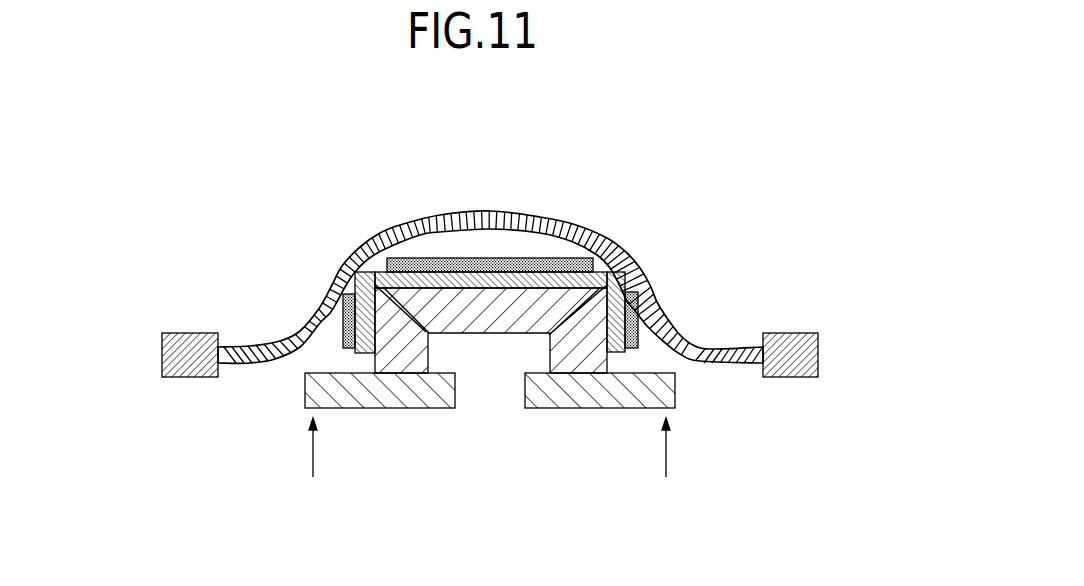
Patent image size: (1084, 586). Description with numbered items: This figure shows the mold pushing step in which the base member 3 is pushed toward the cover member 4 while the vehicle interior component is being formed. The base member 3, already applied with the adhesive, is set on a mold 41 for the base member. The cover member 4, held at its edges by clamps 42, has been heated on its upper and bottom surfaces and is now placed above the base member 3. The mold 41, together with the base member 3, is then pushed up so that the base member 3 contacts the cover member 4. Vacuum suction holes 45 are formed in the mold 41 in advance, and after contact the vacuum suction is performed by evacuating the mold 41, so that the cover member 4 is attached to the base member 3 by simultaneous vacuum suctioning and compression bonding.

The base member 3 is at (475, 288).
The cover member 4 is at (700, 348).
The mold 41 is at (578, 352).
The clamp 42 is at (162, 355).
The vacuum suction hole 45 is at (401, 325).